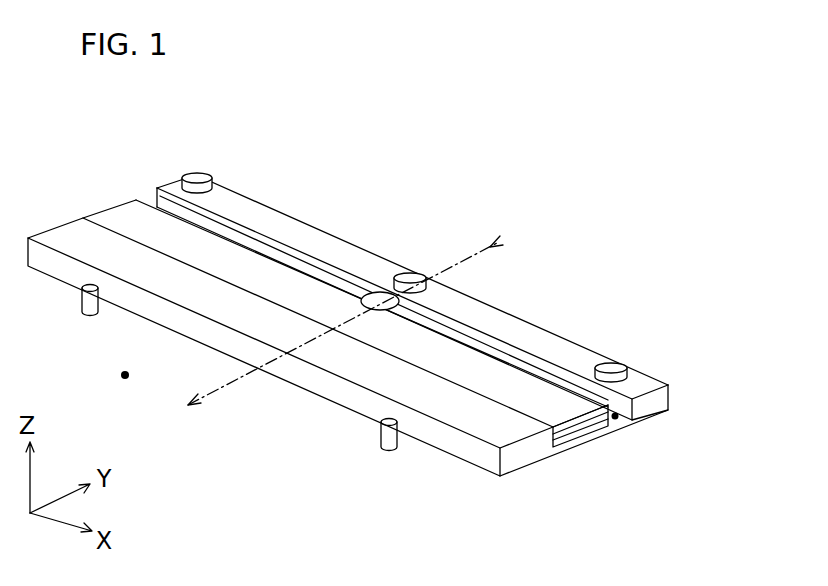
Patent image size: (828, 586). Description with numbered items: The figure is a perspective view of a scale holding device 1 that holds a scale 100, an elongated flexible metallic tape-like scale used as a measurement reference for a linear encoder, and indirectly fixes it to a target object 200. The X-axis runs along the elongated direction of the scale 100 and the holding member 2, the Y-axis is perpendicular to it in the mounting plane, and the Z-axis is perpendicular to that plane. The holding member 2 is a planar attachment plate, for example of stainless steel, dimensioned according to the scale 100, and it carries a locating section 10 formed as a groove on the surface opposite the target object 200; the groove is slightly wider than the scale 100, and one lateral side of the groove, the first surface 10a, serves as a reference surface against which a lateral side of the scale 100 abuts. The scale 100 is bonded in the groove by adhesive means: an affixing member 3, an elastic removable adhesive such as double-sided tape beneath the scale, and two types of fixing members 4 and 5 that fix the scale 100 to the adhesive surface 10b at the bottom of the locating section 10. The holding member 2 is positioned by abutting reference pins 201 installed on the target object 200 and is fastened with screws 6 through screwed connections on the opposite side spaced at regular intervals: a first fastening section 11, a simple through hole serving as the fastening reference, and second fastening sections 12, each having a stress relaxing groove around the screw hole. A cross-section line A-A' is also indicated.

The scale holding device 1 is at (477, 131).
The holding member 2 is at (62, 232).
The affixing member 3 is at (587, 430).
The first fixing member 4 is at (372, 291).
The second fixing member 5 is at (276, 262).
The screw 6 is at (198, 176).
The locating section 10 is at (78, 203).
The first surface 10a is at (562, 426).
The adhesive surface 10b is at (619, 414).
The first fastening section 11 is at (445, 274).
The second fastening section 12 is at (226, 196).
The scale 100 is at (482, 386).
The target object 200 is at (120, 401).
The reference pin 201 is at (88, 314).